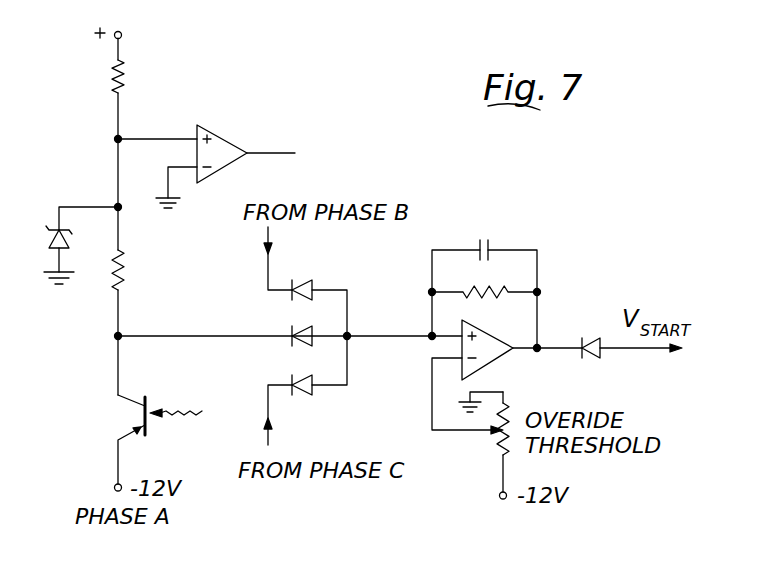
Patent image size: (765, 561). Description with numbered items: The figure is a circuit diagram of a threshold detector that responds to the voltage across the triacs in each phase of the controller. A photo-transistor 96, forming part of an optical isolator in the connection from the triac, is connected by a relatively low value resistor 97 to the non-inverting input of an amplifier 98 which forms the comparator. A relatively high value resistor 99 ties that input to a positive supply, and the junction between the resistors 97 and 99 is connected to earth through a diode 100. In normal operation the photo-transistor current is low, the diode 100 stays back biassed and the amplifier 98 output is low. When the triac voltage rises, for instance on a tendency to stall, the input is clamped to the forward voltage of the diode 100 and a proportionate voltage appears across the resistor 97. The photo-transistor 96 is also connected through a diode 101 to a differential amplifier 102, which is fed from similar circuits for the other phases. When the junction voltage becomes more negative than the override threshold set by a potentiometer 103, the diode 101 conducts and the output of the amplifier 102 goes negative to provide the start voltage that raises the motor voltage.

The photo-transistor 96 is at (135, 405).
The resistor 97 is at (130, 279).
The amplifier 98 is at (228, 136).
The resistor 99 is at (128, 83).
The diode 100 is at (54, 228).
The diode 101 is at (300, 328).
The differential amplifier 102 is at (498, 360).
The potentiometer 103 is at (503, 455).